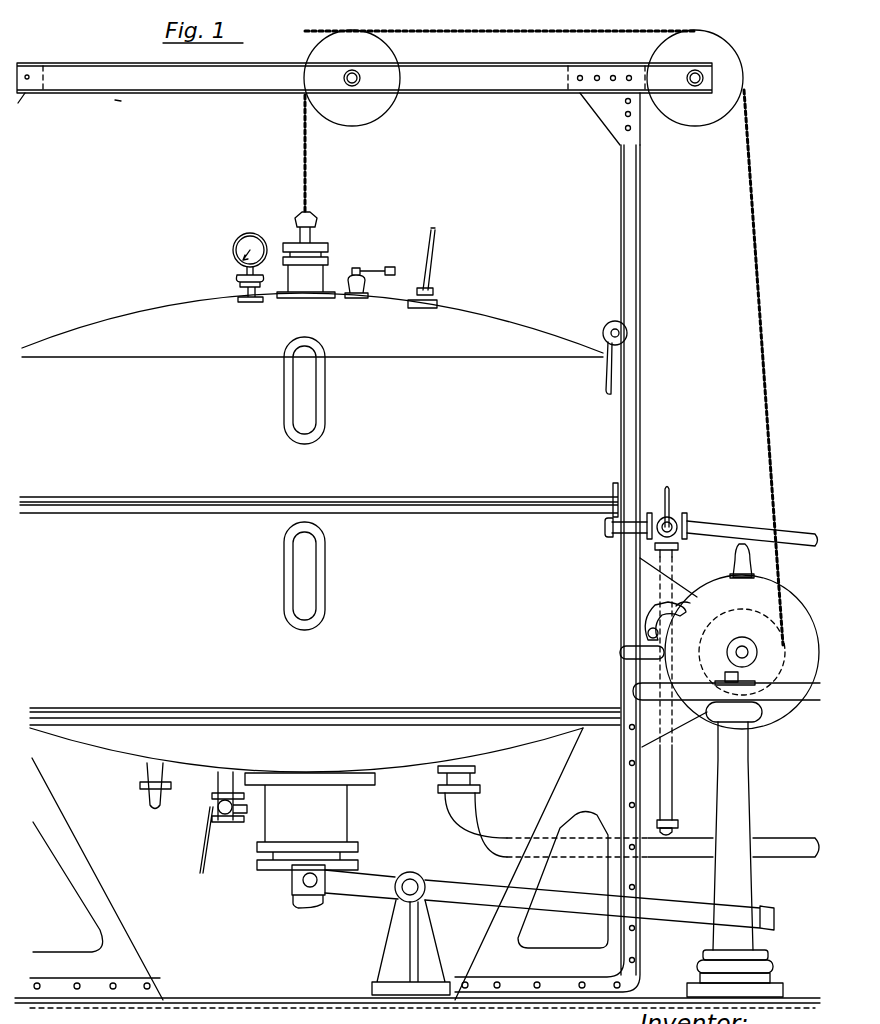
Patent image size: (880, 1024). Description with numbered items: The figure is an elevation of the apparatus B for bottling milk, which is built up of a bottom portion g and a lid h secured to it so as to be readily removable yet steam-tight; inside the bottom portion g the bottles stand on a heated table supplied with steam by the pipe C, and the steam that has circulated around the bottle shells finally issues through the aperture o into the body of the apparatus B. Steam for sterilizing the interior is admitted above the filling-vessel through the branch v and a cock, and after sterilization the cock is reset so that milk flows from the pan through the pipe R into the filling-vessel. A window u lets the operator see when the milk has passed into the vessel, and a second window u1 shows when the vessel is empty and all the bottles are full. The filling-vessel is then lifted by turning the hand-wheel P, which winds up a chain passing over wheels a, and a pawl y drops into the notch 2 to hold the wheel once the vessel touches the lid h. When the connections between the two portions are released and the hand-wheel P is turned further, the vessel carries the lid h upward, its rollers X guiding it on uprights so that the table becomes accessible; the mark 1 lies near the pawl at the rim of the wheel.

The pulleys a is at (378, 120).
The rollers X is at (606, 325).
The lid h is at (312, 309).
The window u is at (322, 393).
The window u1 is at (322, 593).
The bottom portion g is at (320, 627).
The aperture o is at (675, 512).
The pipe R is at (790, 541).
The branch v is at (672, 781).
The hand-wheel P is at (798, 617).
The pawl y is at (655, 610).
The ratchet 1 is at (683, 608).
The notch 2 is at (792, 703).
The pipe C is at (774, 849).
The apparatus B is at (319, 864).